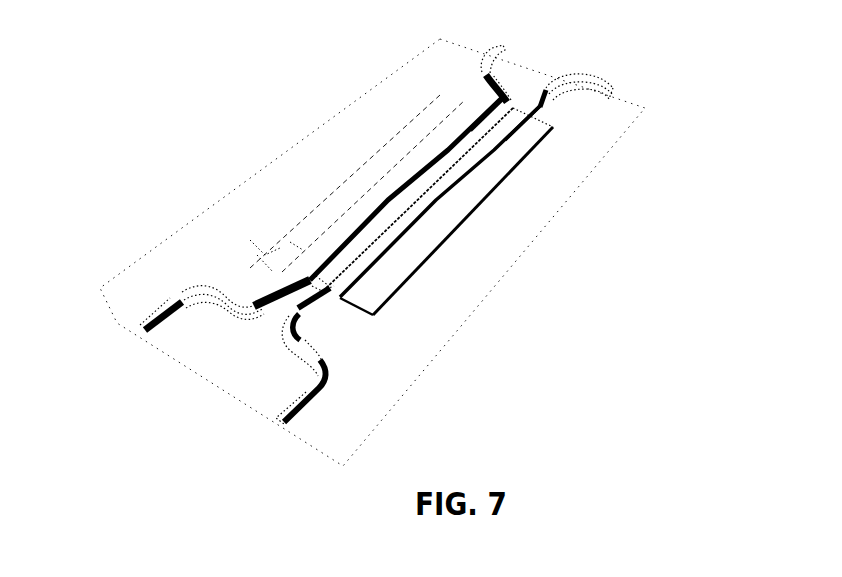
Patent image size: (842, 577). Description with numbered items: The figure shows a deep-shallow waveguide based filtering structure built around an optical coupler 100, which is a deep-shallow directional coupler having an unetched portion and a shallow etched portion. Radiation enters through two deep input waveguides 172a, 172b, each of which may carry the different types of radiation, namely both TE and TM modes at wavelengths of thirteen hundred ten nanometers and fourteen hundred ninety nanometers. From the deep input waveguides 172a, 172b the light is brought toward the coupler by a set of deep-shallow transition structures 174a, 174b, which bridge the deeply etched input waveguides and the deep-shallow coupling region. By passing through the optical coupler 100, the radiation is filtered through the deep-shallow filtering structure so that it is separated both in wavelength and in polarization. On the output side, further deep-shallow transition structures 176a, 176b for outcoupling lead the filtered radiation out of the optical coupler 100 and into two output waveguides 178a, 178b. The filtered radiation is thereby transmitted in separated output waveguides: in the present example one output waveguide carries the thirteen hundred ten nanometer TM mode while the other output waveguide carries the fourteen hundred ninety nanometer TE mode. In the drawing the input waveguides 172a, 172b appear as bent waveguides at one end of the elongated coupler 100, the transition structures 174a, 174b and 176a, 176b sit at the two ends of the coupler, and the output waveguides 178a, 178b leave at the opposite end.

The optical coupler 100 is at (452, 211).
The deep input waveguide 172a is at (192, 295).
The deep input waveguide 172b is at (342, 350).
The deep-shallow transition structure 174a is at (285, 280).
The deep-shallow transition structure 174b is at (440, 227).
The deep-shallow transition structure for outcoupling 176a is at (498, 93).
The deep-shallow transition structure for outcoupling 176b is at (528, 108).
The output waveguide 178a is at (528, 65).
The output waveguide 178b is at (606, 86).